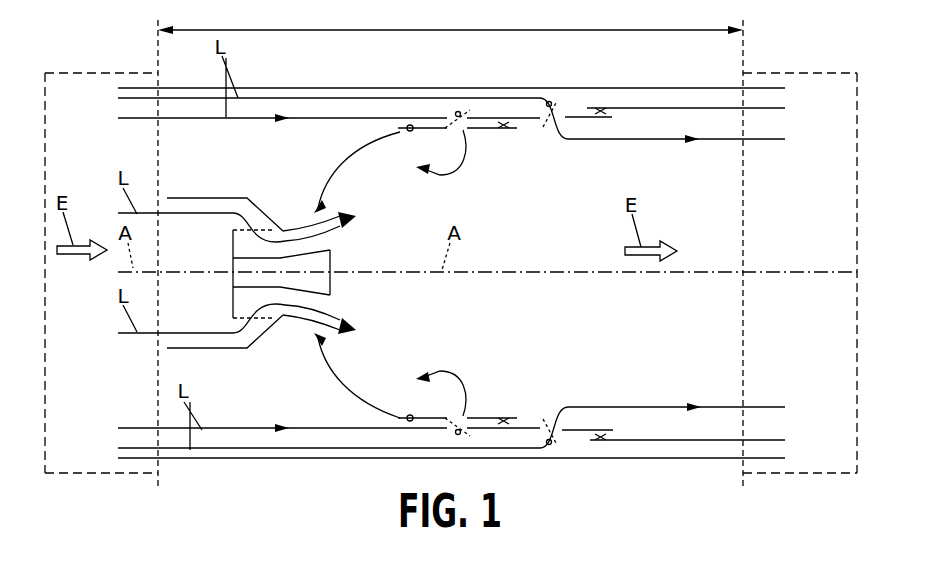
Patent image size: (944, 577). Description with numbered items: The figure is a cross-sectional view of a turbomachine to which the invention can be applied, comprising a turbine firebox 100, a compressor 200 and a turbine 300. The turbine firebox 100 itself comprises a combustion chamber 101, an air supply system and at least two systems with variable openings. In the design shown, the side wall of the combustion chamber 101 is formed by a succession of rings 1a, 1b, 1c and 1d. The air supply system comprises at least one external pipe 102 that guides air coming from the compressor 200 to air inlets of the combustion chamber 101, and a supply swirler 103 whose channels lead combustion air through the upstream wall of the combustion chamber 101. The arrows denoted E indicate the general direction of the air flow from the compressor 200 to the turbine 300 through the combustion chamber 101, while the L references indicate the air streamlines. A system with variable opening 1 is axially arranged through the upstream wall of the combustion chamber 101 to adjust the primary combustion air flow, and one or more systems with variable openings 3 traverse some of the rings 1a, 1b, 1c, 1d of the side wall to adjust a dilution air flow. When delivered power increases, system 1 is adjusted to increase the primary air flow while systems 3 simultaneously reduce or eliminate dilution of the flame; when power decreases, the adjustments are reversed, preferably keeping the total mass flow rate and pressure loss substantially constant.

The system with variable opening 1 is at (271, 327).
The ring 1a is at (333, 162).
The ring 1b is at (486, 130).
The ring 1c is at (577, 116).
The ring 1d is at (663, 107).
The system with variable opening 3 is at (456, 112).
The turbine firebox 100 is at (450, 19).
The combustion chamber 101 is at (518, 235).
The external pipe 102 is at (503, 87).
The supply swirler 103 is at (292, 229).
The compressor 200 is at (89, 68).
The turbine 300 is at (817, 66).